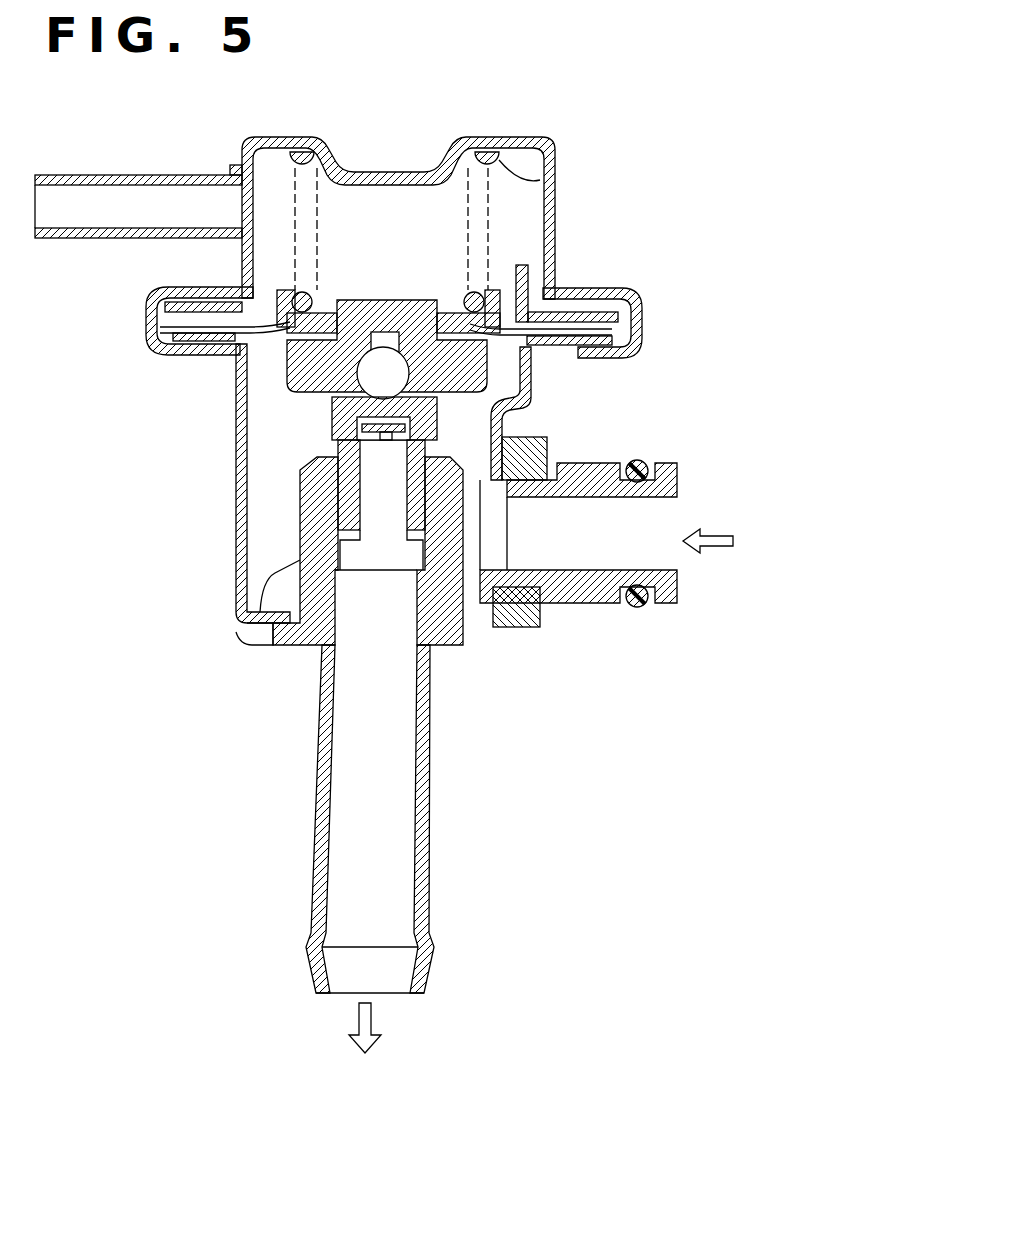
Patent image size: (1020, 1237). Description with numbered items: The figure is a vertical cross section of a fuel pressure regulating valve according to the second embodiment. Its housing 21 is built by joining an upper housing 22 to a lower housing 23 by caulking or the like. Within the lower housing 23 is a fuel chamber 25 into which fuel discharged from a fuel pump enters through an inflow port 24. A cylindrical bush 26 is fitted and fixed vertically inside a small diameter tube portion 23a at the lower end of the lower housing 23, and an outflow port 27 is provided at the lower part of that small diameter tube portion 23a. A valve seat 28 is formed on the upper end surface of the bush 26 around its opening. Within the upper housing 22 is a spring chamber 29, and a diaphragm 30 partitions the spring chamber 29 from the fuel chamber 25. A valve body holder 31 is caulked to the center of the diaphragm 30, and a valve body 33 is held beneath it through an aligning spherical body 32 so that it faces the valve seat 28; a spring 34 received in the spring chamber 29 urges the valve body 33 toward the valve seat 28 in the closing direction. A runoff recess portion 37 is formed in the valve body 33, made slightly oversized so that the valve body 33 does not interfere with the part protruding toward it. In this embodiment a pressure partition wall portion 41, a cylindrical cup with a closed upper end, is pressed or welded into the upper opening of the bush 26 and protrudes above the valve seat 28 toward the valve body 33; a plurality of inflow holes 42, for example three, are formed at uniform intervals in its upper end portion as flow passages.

The housing 21 is at (368, 234).
The upper housing 22 is at (362, 204).
The lower housing 23 is at (217, 507).
The small diameter tube portion 23a is at (247, 623).
The inflow port 24 is at (643, 527).
The fuel chamber 25 is at (520, 393).
The cylindrical bush 26 is at (558, 573).
The outflow port 27 is at (375, 982).
The valve seat 28 is at (437, 427).
The spring chamber 29 is at (398, 208).
The diaphragm 30 is at (552, 282).
The valve body holder 31 is at (388, 297).
The spherical body 32 is at (380, 374).
The valve body 33 is at (467, 418).
The spring 34 is at (543, 152).
The runoff recess portion 37 is at (305, 473).
The pressure partition wall portion 41 is at (335, 405).
The inflow holes 42 is at (335, 433).